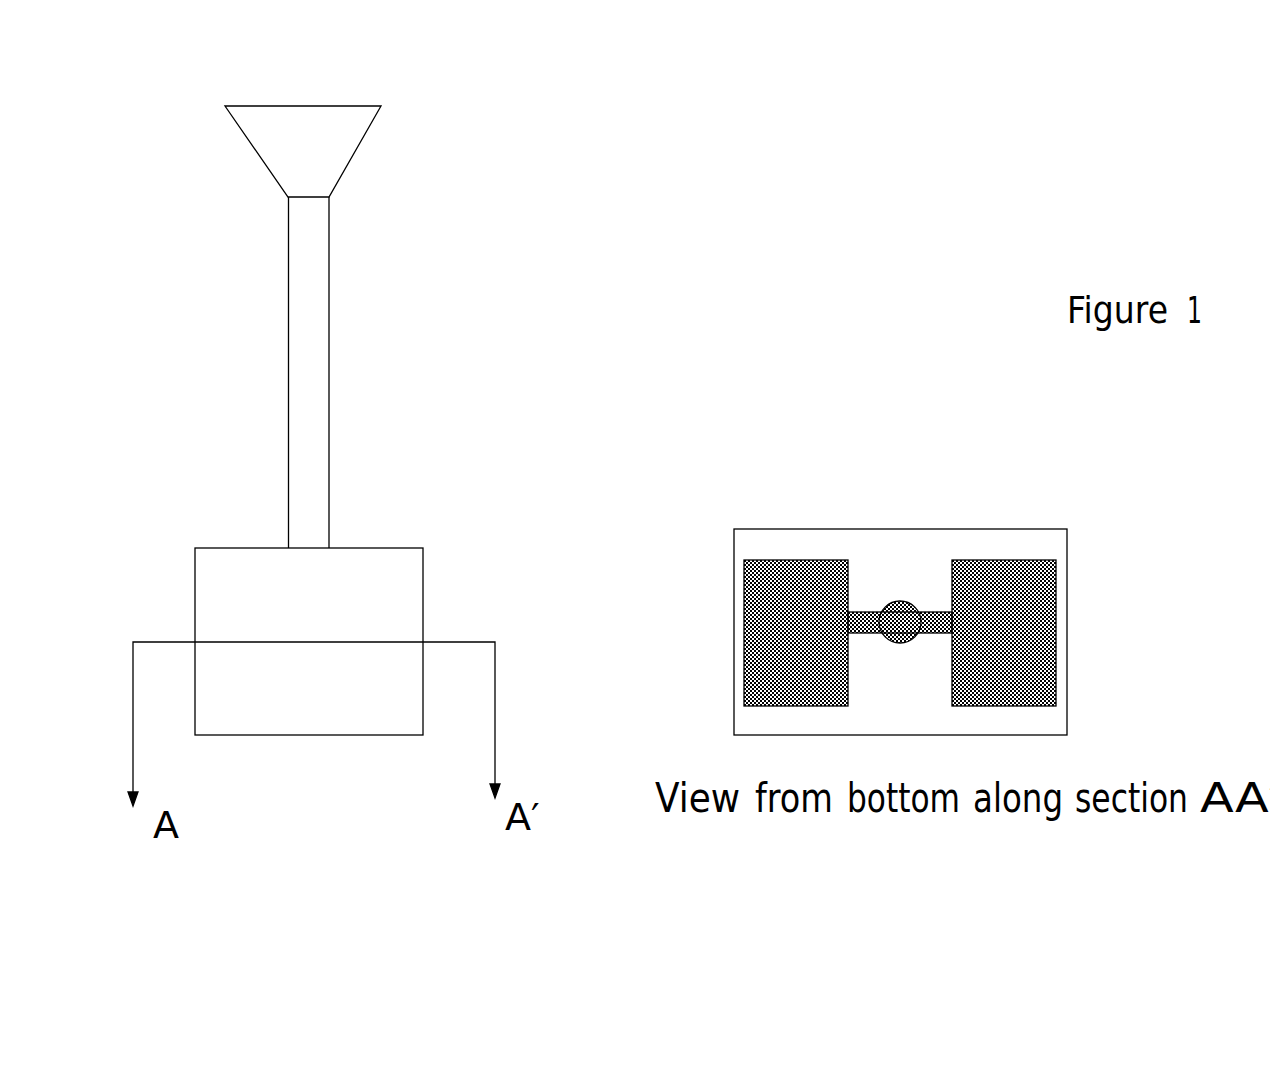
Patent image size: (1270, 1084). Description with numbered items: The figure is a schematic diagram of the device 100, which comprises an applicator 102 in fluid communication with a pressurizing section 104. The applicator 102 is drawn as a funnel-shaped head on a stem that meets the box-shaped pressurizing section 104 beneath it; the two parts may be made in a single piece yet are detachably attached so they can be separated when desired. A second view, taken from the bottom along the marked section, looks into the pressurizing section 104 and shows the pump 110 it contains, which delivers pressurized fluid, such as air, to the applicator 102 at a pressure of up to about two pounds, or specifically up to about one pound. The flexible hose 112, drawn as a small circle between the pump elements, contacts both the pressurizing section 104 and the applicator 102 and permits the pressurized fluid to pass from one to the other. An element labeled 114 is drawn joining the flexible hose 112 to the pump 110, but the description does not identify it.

The device 100 is at (421, 108).
The applicator 102 is at (318, 302).
The pressurizing section 104 is at (402, 580).
The pump 110 is at (1025, 653).
The flexible hose 112 is at (900, 612).
The connecting bar 114 is at (942, 623).